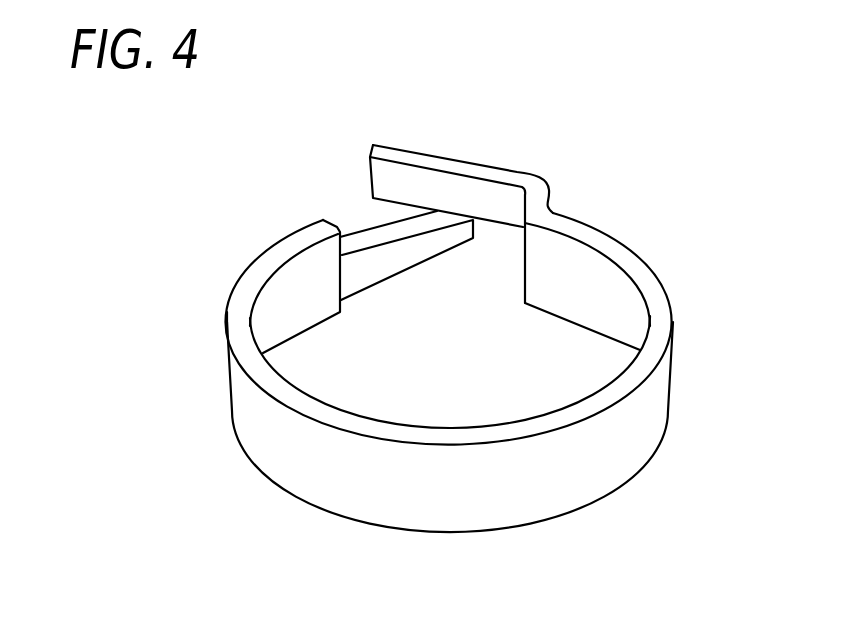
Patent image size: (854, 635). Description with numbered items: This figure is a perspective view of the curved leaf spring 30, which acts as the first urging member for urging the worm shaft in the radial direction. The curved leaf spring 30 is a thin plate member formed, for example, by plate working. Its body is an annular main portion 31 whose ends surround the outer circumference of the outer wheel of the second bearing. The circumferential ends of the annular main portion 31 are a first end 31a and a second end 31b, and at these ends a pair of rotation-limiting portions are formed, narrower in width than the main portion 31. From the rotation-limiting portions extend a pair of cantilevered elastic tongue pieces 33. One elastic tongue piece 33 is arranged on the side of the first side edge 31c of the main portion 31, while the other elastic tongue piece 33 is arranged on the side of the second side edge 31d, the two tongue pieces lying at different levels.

The curved leaf spring 30 is at (652, 144).
The annular main portion 31 is at (412, 487).
The first end 31a is at (599, 288).
The second end 31b is at (303, 293).
The first side edge 31c is at (240, 306).
The second side edge 31d is at (587, 322).
The elastic tongue piece 33 is at (373, 237).